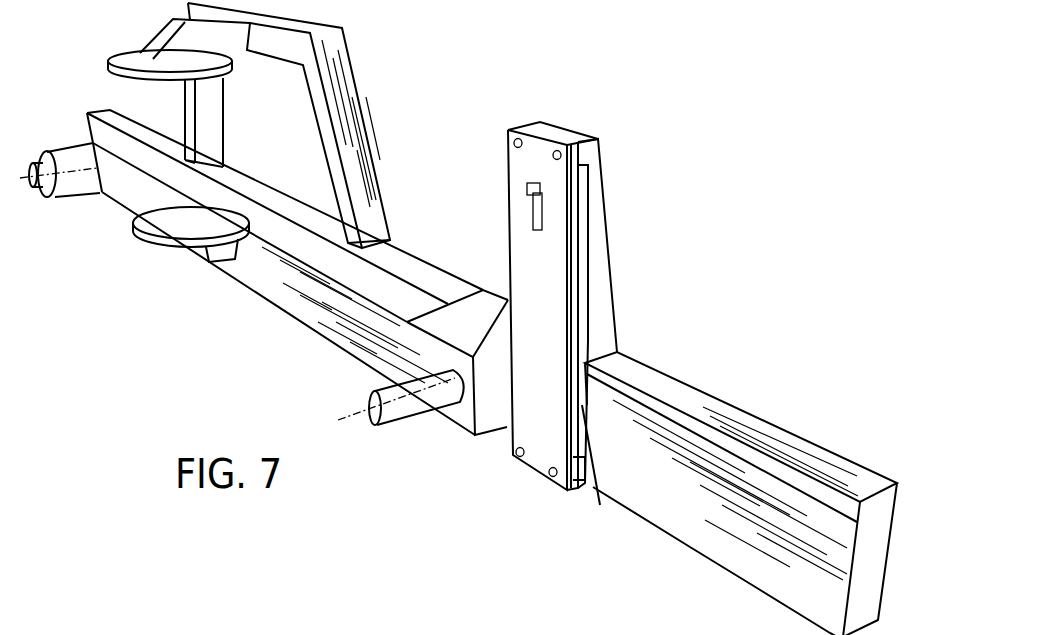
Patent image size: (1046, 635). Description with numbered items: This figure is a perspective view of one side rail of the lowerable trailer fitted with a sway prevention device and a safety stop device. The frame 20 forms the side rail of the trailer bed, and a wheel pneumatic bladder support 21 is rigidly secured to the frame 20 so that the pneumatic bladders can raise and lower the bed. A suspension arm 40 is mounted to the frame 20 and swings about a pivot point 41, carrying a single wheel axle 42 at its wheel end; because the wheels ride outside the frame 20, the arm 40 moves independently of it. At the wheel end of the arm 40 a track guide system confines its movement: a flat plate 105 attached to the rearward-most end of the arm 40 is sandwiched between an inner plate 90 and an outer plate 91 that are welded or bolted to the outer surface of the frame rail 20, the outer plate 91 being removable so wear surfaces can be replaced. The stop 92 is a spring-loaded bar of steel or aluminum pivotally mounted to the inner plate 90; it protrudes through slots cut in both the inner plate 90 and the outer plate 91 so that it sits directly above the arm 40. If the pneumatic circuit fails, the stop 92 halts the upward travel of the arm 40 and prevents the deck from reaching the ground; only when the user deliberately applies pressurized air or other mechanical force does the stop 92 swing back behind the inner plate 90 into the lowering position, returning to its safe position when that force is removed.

The frame 20 is at (725, 402).
The wheel pneumatic bladder support 21 is at (110, 66).
The suspension arm 40 is at (285, 314).
The pivot point 41 is at (20, 180).
The wheel axle 42 is at (353, 415).
The inner plate of track guide system 90 is at (508, 248).
The outer plate of track guide system 91 is at (613, 265).
The stop 92 is at (527, 188).
The flat plate 105 is at (581, 400).